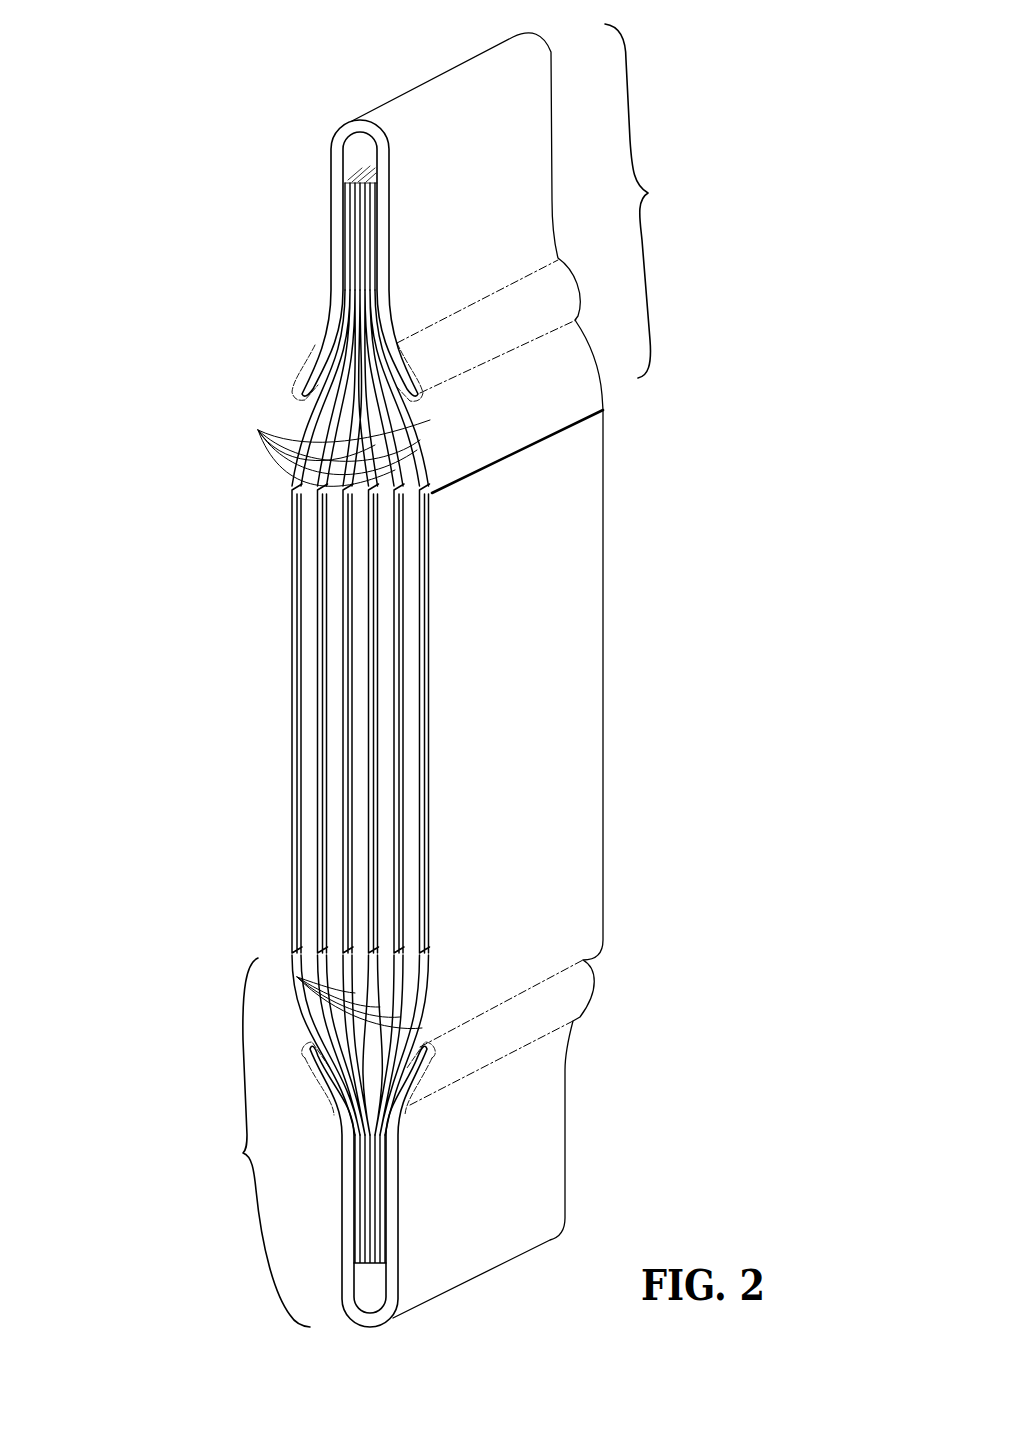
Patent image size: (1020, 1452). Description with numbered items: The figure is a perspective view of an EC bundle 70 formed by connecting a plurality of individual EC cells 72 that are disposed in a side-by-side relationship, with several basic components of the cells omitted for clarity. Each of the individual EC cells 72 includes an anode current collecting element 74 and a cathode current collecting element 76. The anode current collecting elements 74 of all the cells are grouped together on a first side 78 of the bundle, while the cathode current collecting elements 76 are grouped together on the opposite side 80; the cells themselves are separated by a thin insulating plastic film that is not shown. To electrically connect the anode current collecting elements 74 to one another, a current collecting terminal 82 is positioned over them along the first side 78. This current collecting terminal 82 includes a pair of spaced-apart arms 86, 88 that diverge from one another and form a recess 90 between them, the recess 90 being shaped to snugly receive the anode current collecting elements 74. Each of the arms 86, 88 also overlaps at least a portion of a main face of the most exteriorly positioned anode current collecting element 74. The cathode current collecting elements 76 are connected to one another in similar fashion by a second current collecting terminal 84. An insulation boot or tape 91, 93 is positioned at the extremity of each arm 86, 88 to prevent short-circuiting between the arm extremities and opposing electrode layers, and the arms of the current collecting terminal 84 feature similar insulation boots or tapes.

The EC bundle 70 is at (162, 154).
The individual EC cells 72 is at (317, 627).
The anode current collecting element 74 is at (258, 430).
The cathode current collecting element 76 is at (297, 977).
The first side of the bundle 78 is at (643, 201).
The side of the bundle 80 is at (259, 1142).
The current collecting terminal 82 is at (404, 89).
The current collecting terminal 84 is at (397, 1336).
The arm 86 is at (530, 233).
The arm 88 is at (328, 318).
The recess 90 is at (358, 159).
The insulation boot or tape 91 is at (528, 302).
The insulation boot or tape 93 is at (303, 367).